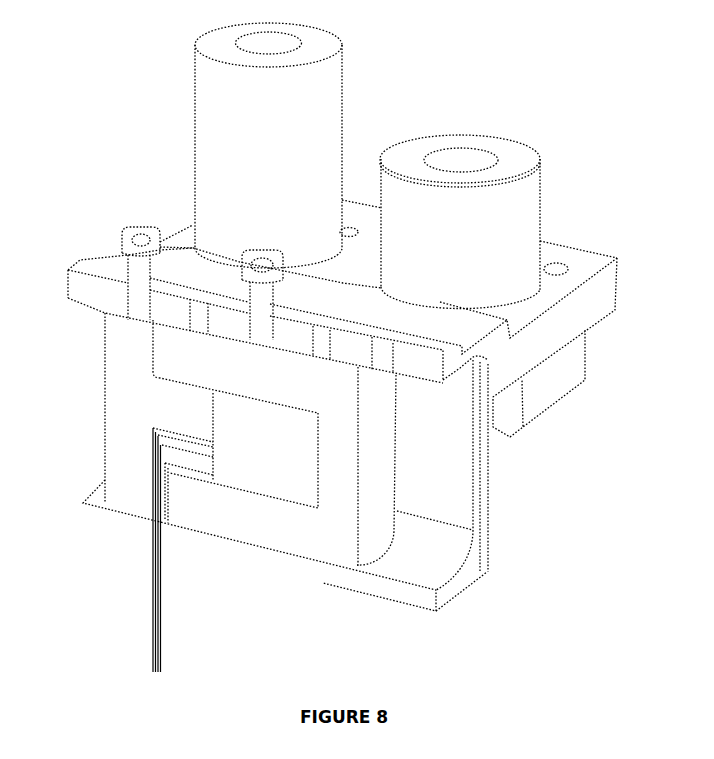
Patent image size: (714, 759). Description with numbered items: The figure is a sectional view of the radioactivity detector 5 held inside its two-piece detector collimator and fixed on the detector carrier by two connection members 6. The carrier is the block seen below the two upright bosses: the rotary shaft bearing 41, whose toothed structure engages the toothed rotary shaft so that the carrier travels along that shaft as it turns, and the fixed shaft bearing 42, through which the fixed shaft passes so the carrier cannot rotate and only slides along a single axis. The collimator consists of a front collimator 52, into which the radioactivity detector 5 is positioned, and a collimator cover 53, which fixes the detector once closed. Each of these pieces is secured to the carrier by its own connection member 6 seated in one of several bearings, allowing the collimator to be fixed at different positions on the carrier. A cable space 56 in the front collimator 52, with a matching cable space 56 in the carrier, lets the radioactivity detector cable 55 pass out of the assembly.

The radioactivity detector 5 is at (270, 453).
The connection member 6 is at (127, 260).
The rotary shaft bearing 41 is at (540, 213).
The fixed shaft bearing 42 is at (194, 158).
The front collimator 52 is at (367, 460).
The collimator cover 53 is at (99, 395).
The radioactivity detector cable 55 is at (151, 617).
The cable space 56 is at (151, 486).